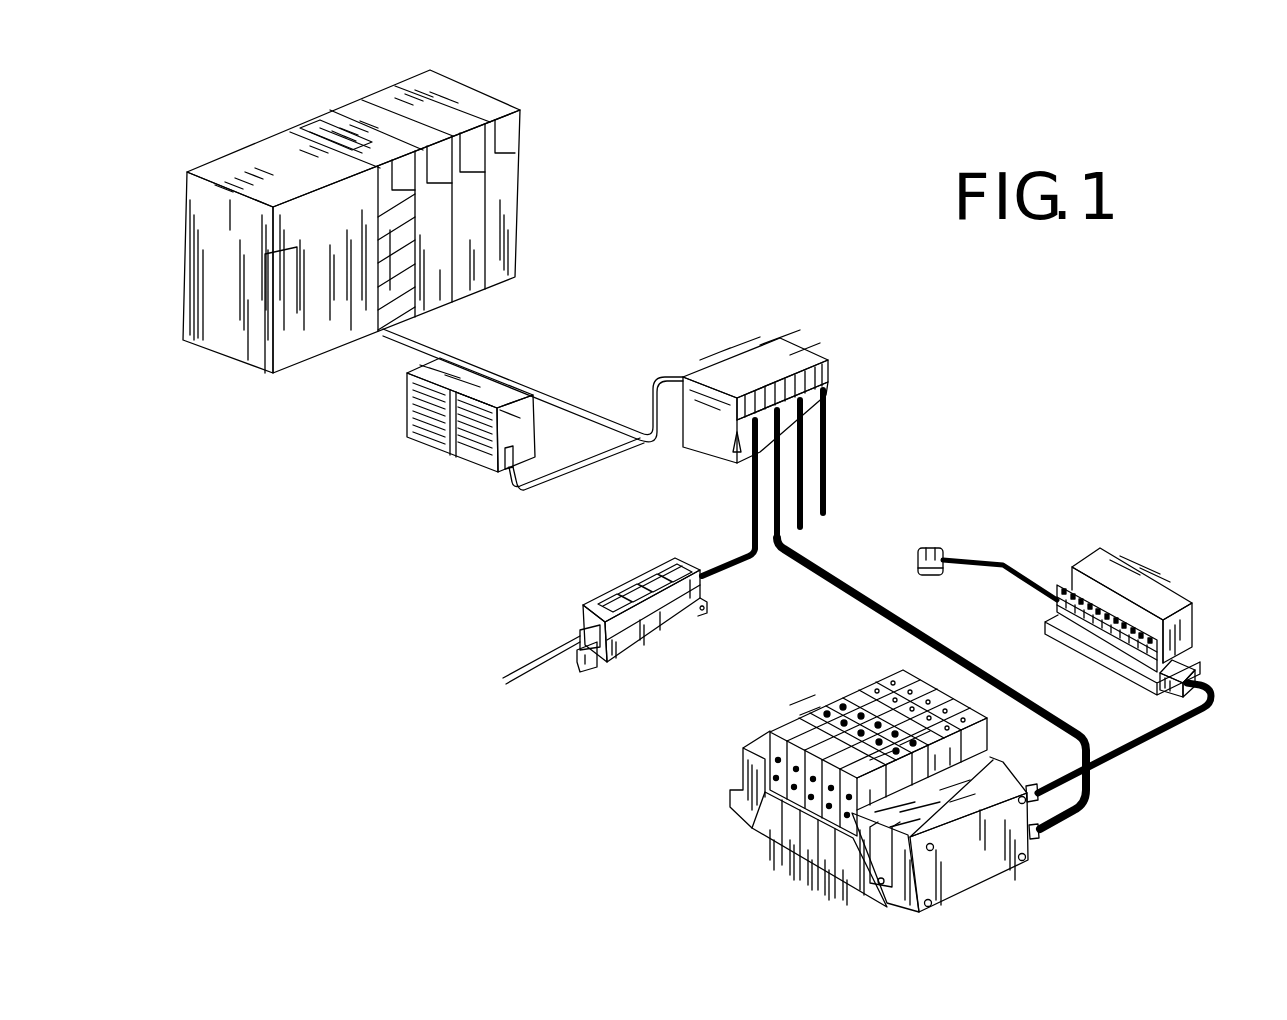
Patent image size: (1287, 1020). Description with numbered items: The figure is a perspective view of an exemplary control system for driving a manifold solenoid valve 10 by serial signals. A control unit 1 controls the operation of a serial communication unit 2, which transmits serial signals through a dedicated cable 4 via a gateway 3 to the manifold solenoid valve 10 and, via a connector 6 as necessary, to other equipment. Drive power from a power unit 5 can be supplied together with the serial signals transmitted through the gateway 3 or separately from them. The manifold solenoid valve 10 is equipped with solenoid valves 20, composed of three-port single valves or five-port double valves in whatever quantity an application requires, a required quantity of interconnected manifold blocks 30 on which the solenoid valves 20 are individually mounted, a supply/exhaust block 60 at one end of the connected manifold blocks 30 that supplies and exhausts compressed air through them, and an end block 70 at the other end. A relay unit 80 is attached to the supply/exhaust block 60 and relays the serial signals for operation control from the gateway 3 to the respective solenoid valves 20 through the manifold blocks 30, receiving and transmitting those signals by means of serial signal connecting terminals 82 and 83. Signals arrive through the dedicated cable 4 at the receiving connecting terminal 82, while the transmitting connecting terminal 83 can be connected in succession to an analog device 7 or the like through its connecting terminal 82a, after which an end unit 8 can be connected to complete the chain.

The control unit 1 is at (200, 222).
The serial communication unit 2 is at (308, 122).
The gateway 3 is at (790, 352).
The dedicated cable 4 is at (852, 591).
The power unit 5 is at (418, 372).
The connector 6 is at (627, 587).
The analog device 7 is at (1147, 583).
The end unit 8 is at (935, 548).
The manifold solenoid valve 10 is at (885, 788).
The solenoid valves 20 is at (876, 690).
The manifold blocks 30 is at (795, 845).
The supply/exhaust block 60 is at (860, 880).
The end block 70 is at (757, 812).
The relay unit 80 is at (988, 870).
The receiving connecting terminal 82 is at (1040, 834).
The connecting terminal 82a is at (1193, 663).
The transmitting connecting terminal 83 is at (1031, 786).